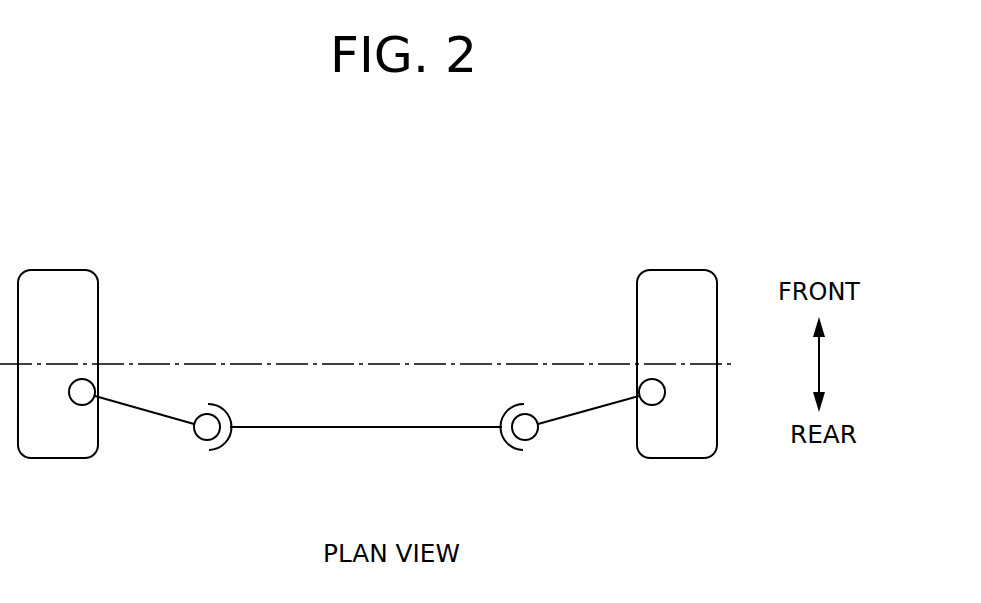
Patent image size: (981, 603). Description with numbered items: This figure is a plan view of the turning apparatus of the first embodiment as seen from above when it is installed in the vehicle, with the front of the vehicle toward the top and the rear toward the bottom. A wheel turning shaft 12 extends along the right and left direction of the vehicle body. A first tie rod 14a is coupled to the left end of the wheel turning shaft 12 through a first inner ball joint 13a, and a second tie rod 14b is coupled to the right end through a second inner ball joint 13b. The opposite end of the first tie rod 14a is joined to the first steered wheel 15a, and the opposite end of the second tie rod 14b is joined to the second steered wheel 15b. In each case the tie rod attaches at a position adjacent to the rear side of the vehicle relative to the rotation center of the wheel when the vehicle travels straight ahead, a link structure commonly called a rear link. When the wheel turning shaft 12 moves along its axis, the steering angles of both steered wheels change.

The wheel turning shaft 12 is at (365, 428).
The first inner ball joint 13a is at (222, 450).
The second inner ball joint 13b is at (512, 450).
The first tie rod 14a is at (143, 407).
The second tie rod 14b is at (588, 407).
The first steered wheel 15a is at (60, 268).
The second steered wheel 15b is at (677, 268).